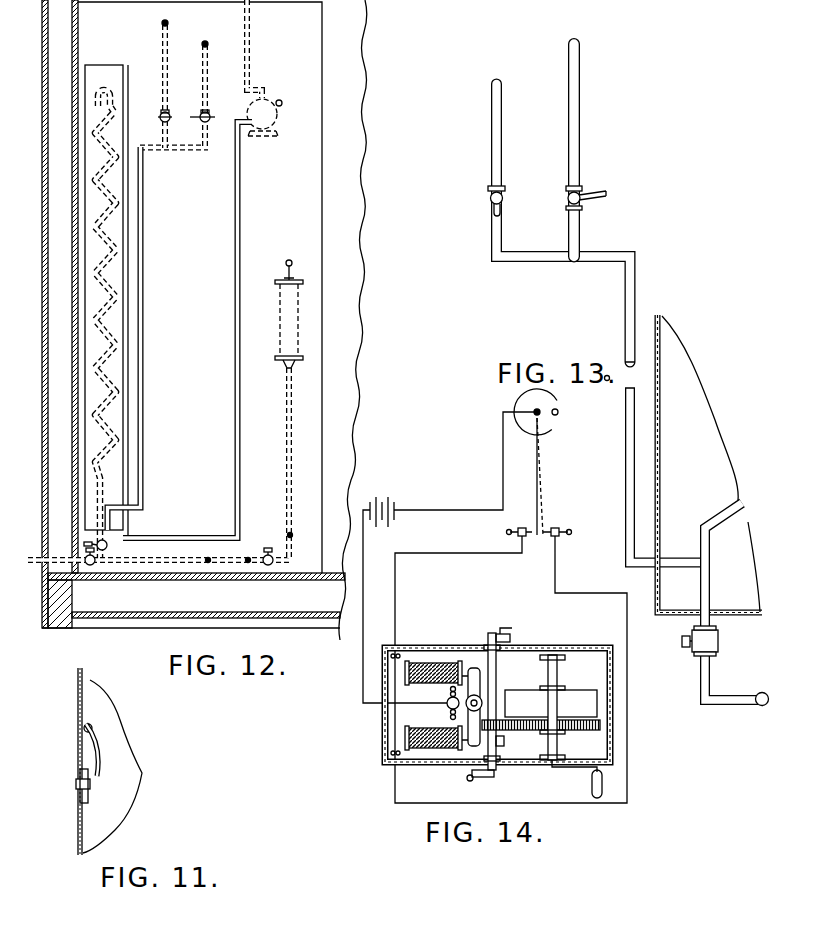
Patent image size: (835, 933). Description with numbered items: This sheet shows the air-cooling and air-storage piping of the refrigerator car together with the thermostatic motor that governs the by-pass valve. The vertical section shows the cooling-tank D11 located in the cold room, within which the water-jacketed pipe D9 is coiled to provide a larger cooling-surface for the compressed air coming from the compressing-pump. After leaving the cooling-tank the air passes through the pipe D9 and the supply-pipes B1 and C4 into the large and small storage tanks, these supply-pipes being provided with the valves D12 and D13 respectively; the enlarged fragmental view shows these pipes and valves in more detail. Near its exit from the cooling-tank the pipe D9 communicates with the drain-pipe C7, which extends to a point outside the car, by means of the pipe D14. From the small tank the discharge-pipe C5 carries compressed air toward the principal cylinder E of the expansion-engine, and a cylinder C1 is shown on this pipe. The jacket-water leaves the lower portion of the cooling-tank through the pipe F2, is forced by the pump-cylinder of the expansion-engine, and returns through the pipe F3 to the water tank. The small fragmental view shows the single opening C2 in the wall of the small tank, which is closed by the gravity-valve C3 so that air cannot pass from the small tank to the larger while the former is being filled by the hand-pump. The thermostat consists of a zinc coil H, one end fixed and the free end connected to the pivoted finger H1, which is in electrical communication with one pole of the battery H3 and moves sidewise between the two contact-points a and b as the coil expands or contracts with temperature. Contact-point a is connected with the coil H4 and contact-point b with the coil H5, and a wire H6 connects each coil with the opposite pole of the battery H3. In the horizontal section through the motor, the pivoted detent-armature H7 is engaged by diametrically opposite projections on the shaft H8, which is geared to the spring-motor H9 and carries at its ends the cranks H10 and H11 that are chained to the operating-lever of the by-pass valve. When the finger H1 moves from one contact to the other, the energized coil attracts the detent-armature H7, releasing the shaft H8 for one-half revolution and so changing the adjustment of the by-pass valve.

In FIG. 12, the supply-pipe B1 is at (169, 80).
In FIG. 13, the supply-pipe B1 is at (581, 134).
In FIG. 12, the supply-pipe C4 is at (208, 80).
In FIG. 13, the supply-pipe C4 is at (503, 150).
In FIG. 12, the pipe F3 is at (250, 52).
In FIG. 12, the valve D12 is at (168, 114).
In FIG. 13, the valve D12 is at (585, 186).
In FIG. 12, the valve D13 is at (209, 114).
In FIG. 13, the valve D13 is at (506, 195).
In FIG. 12, the principal cylinder of expansion-engine E is at (264, 117).
In FIG. 12, the pipe D9 is at (142, 257).
In FIG. 13, the pipe D9 is at (636, 292).
In FIG. 12, the pipe F2 is at (241, 238).
In FIG. 12, the cylinder C1 is at (295, 329).
In FIG. 12, the discharge-pipe C5 is at (291, 441).
In FIG. 12, the cooling-tank D11 is at (128, 424).
In FIG. 13, the cooling-tank D11 is at (710, 464).
In FIG. 12, the drain-pipe C7 is at (165, 561).
In FIG. 13, the drain-pipe C7 is at (724, 698).
In FIG. 13, the pipe D14 is at (710, 588).
In FIG. 11, the opening C2 is at (76, 785).
In FIG. 11, the gravity-valve C3 is at (99, 779).
In FIG. 13, the zinc coil H is at (539, 462).
In FIG. 13, the pivoted finger H1 is at (546, 488).
In FIG. 13, the battery H3 is at (450, 557).
In FIG. 13, the contact-point a is at (522, 526).
In FIG. 13, the contact-point b is at (557, 525).
In FIG. 14, the coil H4 is at (435, 663).
In FIG. 14, the coil H5 is at (432, 748).
In FIG. 14, the wire H6 is at (423, 705).
In FIG. 14, the detent-armature H7 is at (483, 690).
In FIG. 14, the shaft H8 is at (551, 703).
In FIG. 14, the spring-motor H9 is at (542, 726).
In FIG. 14, the crank H10 is at (498, 640).
In FIG. 14, the crank H11 is at (489, 770).